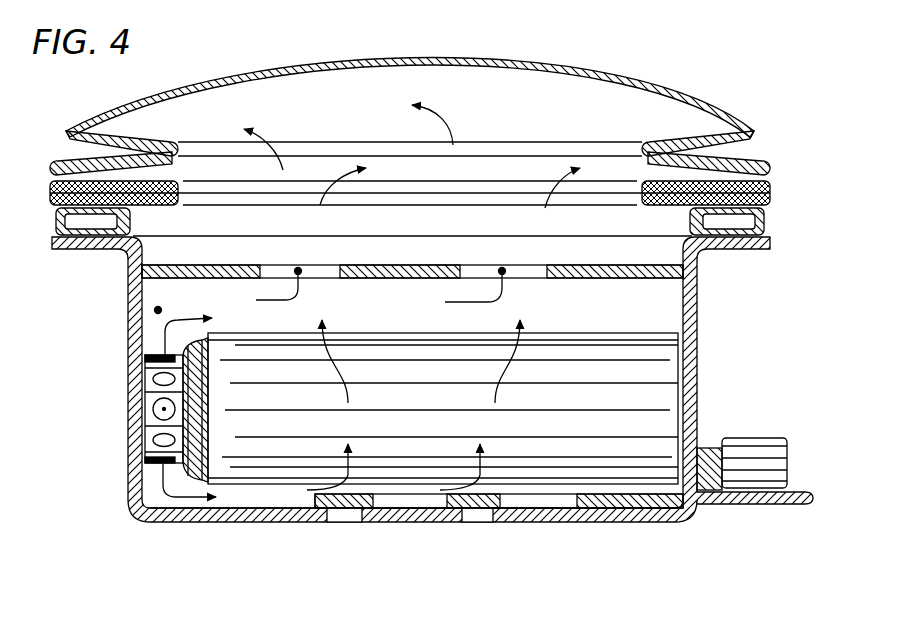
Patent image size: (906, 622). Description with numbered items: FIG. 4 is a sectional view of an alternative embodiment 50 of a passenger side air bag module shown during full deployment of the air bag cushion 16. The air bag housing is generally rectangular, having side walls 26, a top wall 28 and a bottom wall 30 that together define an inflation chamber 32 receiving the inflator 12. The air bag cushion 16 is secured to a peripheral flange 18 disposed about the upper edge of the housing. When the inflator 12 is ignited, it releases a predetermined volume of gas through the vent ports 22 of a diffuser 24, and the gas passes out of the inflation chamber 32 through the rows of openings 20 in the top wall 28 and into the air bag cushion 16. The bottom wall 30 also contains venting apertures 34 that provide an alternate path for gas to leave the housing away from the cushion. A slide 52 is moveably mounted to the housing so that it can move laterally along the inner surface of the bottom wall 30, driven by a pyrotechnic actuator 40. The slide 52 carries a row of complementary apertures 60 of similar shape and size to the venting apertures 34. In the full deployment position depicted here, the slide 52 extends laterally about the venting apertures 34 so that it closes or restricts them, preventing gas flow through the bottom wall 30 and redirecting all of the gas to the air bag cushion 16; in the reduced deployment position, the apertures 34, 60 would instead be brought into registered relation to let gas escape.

The inflator 12 is at (590, 460).
The air bag cushion 16 is at (448, 62).
The peripheral flange 18 is at (90, 253).
The openings 20 is at (261, 262).
The vent ports 22 is at (158, 449).
The diffuser 24 is at (143, 356).
The side walls 26 is at (150, 406).
The top wall 28 is at (400, 264).
The bottom wall 30 is at (238, 518).
The inflation chamber 32 is at (152, 310).
The venting apertures 34 is at (470, 520).
The pyrotechnic actuator 40 is at (748, 447).
The alternative embodiment 50 is at (634, 65).
The slide 52 is at (489, 497).
The complementary apertures 60 is at (411, 491).